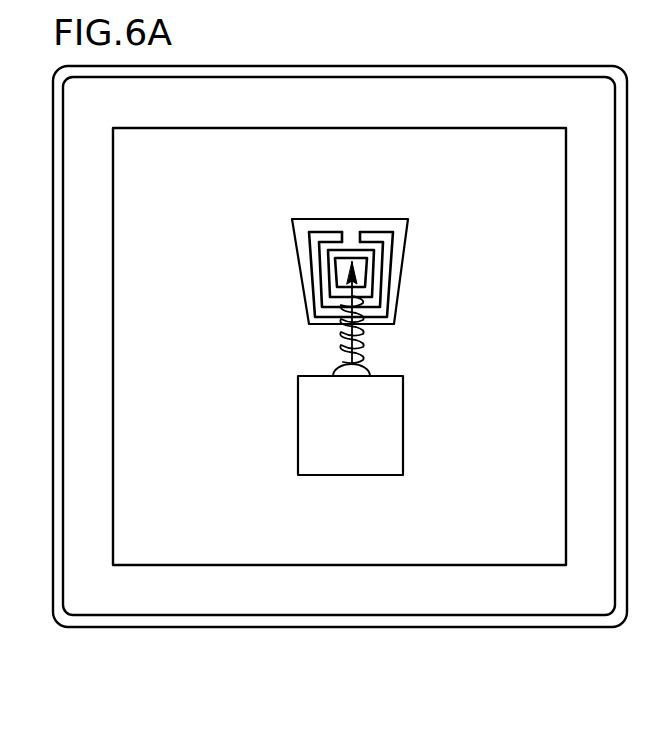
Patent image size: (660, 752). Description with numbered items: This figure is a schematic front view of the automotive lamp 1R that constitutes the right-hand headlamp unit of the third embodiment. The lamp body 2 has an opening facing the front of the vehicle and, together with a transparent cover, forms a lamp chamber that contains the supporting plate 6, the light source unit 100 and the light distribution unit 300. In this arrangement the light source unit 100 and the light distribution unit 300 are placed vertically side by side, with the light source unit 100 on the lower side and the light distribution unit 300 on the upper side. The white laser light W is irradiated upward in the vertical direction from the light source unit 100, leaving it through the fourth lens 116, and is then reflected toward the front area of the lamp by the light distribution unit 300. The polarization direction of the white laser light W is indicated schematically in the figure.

The automotive lamp 1R is at (367, 710).
The lamp body 2 is at (513, 627).
The supporting plate 6 is at (142, 565).
The light distribution unit 300 is at (408, 217).
The white laser light W is at (367, 338).
The fourth lens 116 is at (333, 364).
The light source unit 100 is at (403, 440).